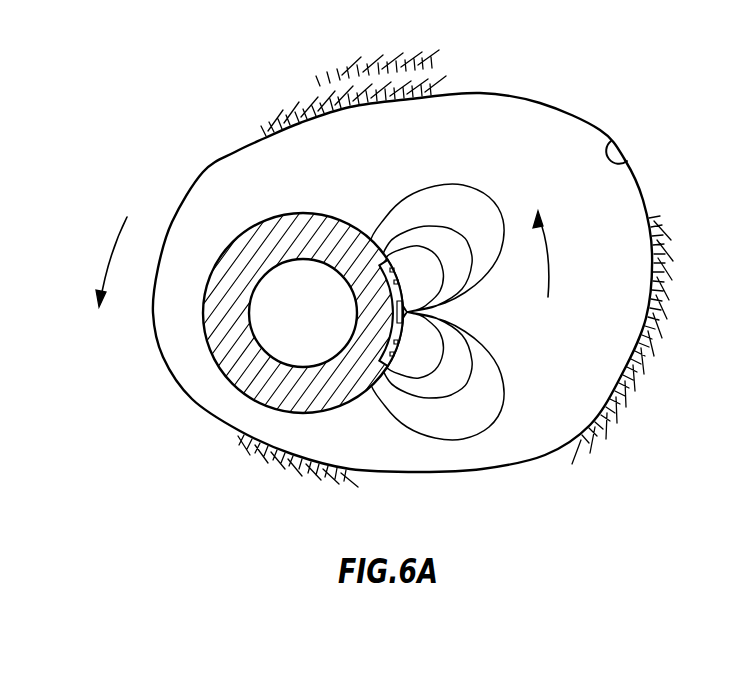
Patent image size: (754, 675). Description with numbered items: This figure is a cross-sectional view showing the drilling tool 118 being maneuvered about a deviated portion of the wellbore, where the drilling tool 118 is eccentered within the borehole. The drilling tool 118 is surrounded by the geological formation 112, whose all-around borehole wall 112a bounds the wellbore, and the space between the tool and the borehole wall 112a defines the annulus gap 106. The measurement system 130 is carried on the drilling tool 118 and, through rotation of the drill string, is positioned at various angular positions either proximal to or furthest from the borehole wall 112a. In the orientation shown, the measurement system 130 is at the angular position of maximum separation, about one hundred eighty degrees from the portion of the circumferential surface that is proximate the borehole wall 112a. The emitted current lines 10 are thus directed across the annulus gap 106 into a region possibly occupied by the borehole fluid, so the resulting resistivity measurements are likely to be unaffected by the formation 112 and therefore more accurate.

The emitted current lines 10 is at (460, 217).
The annulus gap 106 is at (578, 389).
The geological formation 112 is at (734, 207).
The borehole wall 112a is at (630, 163).
The drilling tool 118 is at (263, 216).
The measurement system 130 is at (378, 350).